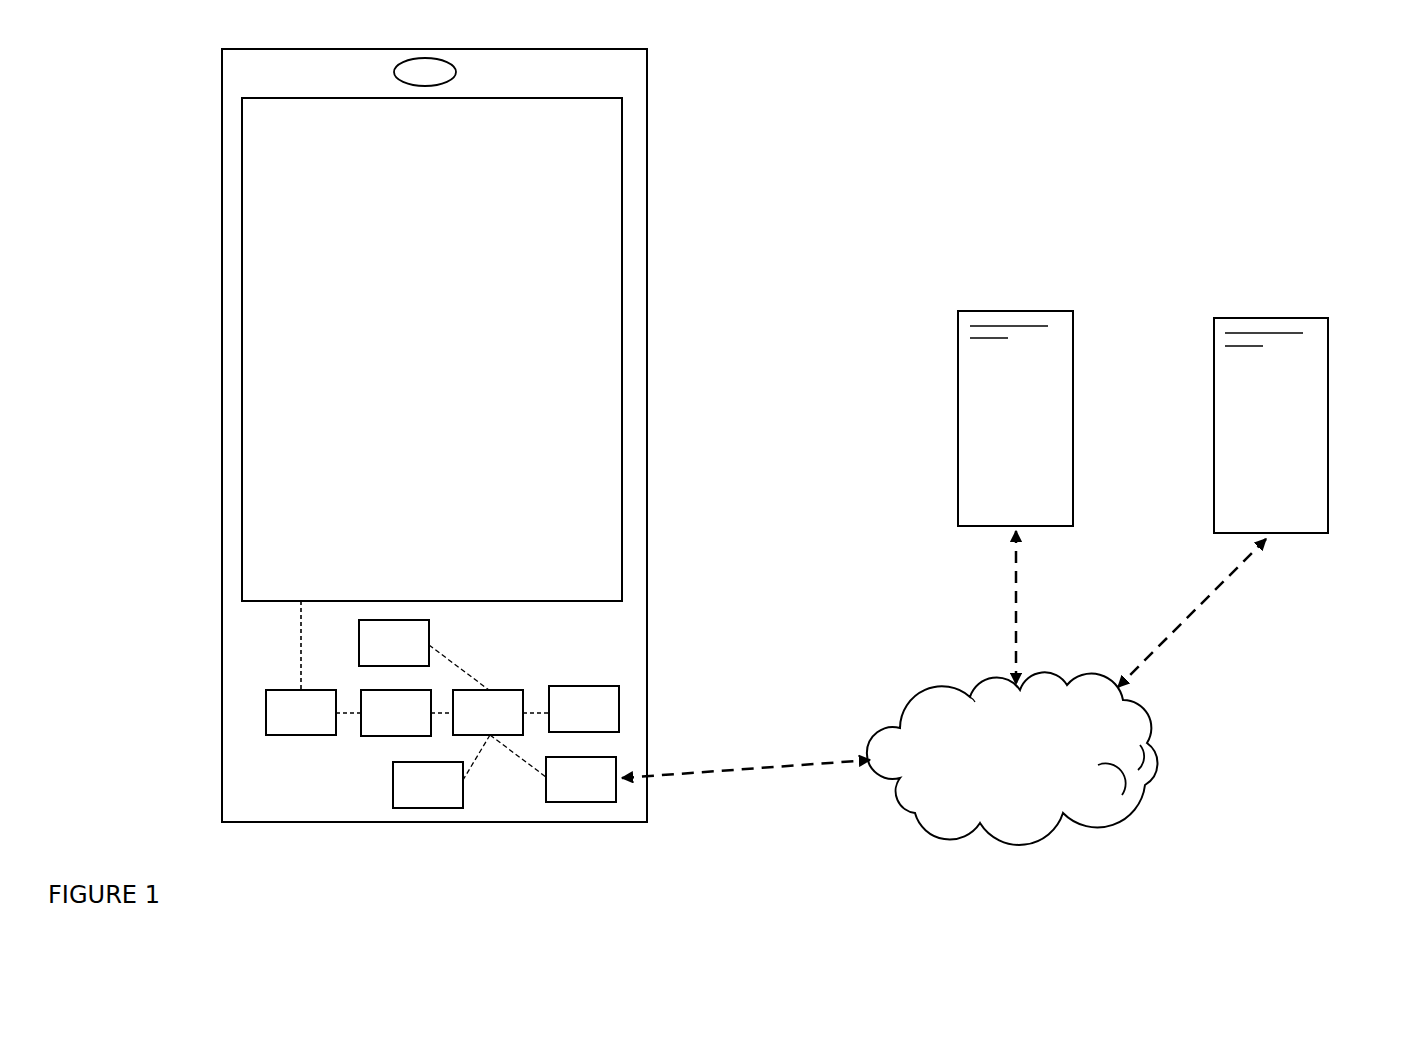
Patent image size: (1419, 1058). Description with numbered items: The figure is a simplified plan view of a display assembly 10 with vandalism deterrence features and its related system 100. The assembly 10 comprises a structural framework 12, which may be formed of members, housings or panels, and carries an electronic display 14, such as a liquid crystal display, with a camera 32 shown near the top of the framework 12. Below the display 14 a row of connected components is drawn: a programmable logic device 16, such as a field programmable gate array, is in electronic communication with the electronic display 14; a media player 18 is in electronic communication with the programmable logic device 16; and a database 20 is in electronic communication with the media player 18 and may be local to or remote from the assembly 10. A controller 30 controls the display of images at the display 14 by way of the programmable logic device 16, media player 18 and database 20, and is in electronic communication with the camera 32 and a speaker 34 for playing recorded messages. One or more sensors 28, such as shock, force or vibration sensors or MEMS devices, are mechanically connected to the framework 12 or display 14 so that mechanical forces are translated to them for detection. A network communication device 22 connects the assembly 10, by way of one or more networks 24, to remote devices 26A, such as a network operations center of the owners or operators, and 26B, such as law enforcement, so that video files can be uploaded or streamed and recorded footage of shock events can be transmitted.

The display assembly 10 is at (722, 166).
The structural framework 12 is at (640, 341).
The electronic display 14 is at (573, 530).
The programmable logic device 16 is at (300, 713).
The media player 18 is at (382, 737).
The database 20 is at (620, 708).
The network communication device 22 is at (582, 803).
The network 24 is at (1012, 758).
The remote device 26A is at (1046, 473).
The remote device 26B is at (1302, 480).
The sensor 28 is at (427, 808).
The controller 30 is at (503, 703).
The camera 32 is at (433, 71).
The speaker 34 is at (429, 642).
The system 100 is at (1187, 165).